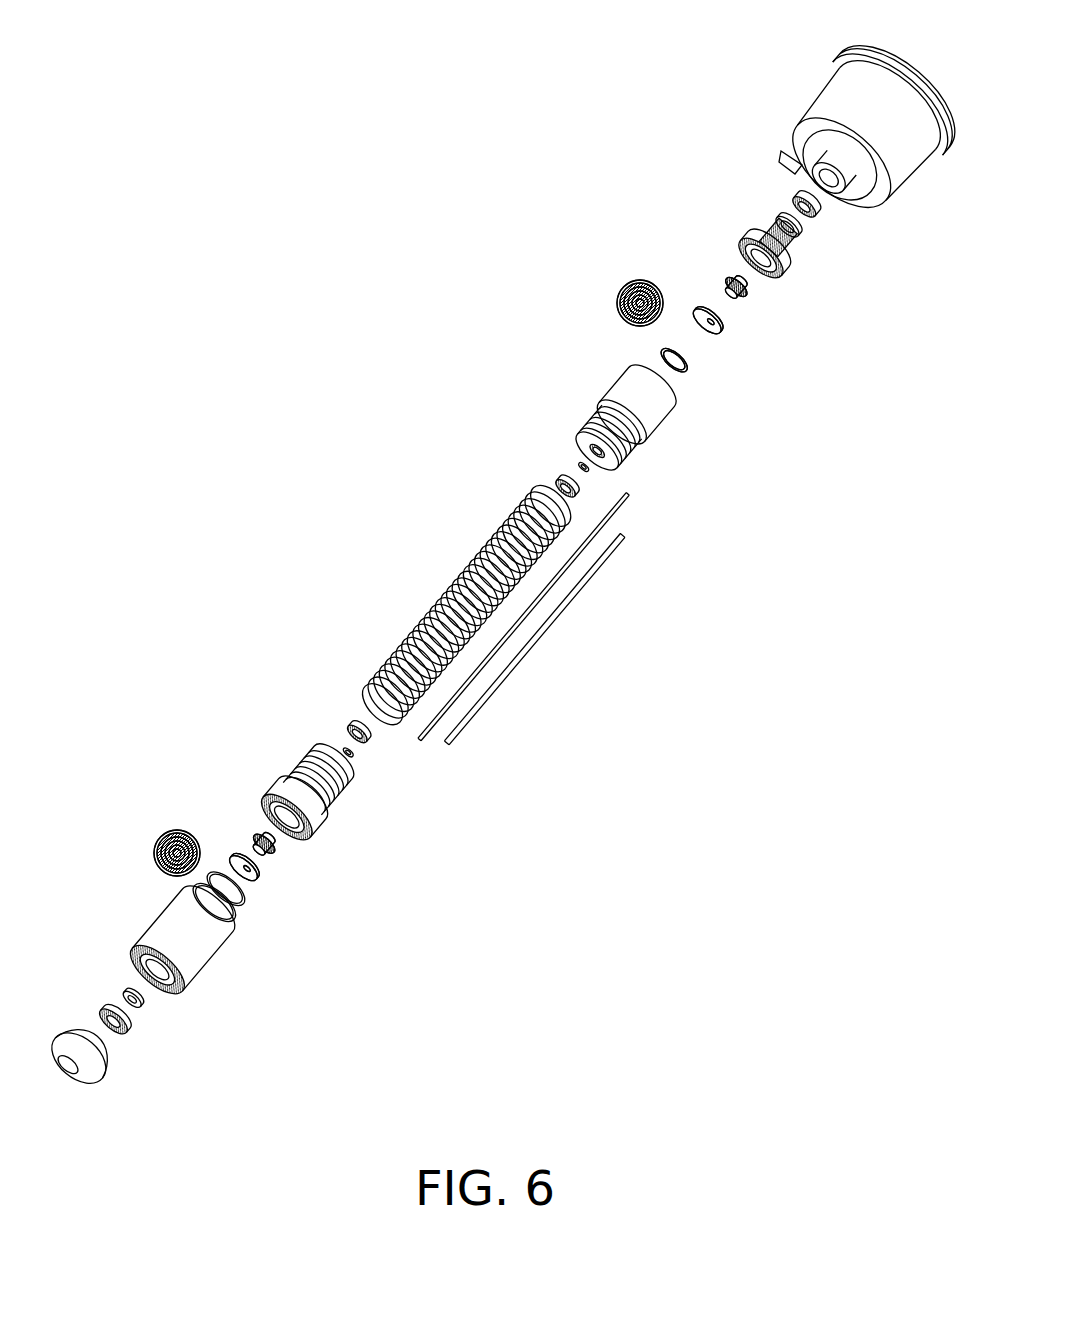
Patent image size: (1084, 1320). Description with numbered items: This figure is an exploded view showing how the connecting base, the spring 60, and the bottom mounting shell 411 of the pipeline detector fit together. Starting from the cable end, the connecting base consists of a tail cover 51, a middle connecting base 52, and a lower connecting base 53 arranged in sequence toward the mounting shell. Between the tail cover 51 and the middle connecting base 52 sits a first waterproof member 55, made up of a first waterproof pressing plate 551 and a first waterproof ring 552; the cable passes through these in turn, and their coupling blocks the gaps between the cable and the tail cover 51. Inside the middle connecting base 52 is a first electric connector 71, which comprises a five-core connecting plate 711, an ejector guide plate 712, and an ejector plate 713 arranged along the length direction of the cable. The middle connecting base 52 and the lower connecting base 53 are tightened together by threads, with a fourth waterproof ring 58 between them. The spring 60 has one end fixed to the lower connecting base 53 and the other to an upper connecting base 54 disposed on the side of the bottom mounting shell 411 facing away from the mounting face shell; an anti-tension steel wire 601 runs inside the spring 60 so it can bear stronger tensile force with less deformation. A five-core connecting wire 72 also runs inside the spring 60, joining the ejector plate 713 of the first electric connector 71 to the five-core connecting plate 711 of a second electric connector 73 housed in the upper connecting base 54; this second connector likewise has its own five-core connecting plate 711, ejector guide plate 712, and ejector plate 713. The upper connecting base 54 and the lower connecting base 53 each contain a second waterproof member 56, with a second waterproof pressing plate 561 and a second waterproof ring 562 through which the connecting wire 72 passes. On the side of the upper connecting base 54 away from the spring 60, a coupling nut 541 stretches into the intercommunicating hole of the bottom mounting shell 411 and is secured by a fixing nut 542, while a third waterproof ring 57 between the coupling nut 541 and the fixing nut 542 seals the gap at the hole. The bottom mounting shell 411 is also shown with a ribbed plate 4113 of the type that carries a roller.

The bottom mounting shell 411 is at (809, 129).
The ribbed plate 4113 is at (723, 129).
The third waterproof ring 57 is at (780, 213).
The coupling nut 541 is at (797, 267).
The fixing nut 542 is at (817, 217).
The upper connecting base 54 is at (613, 390).
The second electric connector 73 is at (577, 173).
The first electric connector 71 is at (137, 753).
The five-core connecting plate 711 is at (160, 847).
The ejector guide plate 712 is at (233, 850).
The ejector plate 713 is at (253, 830).
The second waterproof member 56 is at (383, 570).
The second waterproof pressing plate 561 is at (350, 730).
The second waterproof ring 562 is at (343, 750).
The spring 60 is at (455, 580).
The five-core connecting wire 72 is at (570, 562).
The anti-tension steel wire 601 is at (545, 630).
The lower connecting base 53 is at (320, 812).
The fourth waterproof ring 58 is at (228, 893).
The middle connecting base 52 is at (200, 950).
The first waterproof member 55 is at (190, 1035).
The first waterproof pressing plate 551 is at (125, 1030).
The first waterproof ring 552 is at (140, 1000).
The tail cover 51 is at (95, 1073).